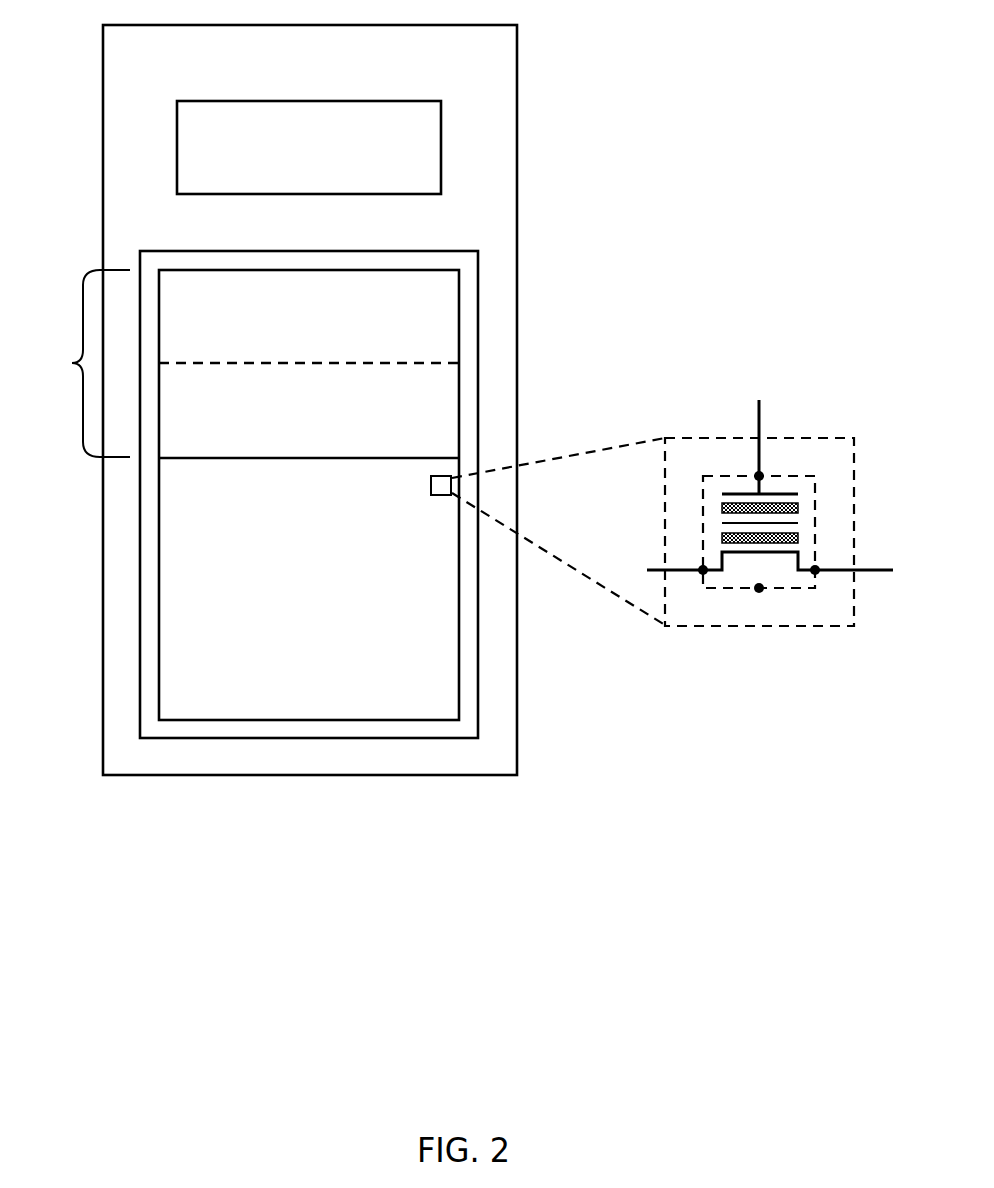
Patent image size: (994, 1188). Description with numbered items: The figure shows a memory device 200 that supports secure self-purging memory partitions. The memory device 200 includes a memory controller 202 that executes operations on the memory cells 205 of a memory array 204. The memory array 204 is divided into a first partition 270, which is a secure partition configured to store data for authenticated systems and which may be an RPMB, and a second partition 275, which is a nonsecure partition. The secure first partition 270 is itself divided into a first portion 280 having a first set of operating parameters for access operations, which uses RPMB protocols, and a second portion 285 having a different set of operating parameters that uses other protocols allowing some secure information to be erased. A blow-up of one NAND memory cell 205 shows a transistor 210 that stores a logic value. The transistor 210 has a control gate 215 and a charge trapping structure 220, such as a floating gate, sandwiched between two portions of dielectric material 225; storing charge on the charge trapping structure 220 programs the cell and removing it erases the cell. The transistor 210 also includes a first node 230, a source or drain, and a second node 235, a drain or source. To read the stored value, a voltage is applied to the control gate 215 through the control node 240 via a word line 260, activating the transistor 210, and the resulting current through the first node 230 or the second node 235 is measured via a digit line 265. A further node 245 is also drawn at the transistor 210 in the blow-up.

The memory device 200 is at (310, 400).
The memory controller 202 is at (309, 147).
The memory array 204 is at (177, 250).
The memory cell 205 is at (438, 475).
The transistor 210 is at (703, 495).
The control gate 215 is at (778, 494).
The charge trapping structure 220 is at (722, 523).
The dielectric material 225 is at (798, 537).
The first node 230 is at (703, 575).
The second node 235 is at (815, 575).
The control node 240 is at (759, 476).
The gate terminal 245 is at (759, 593).
The word line 260 is at (759, 420).
The digit line 265 is at (873, 570).
The first partition 270 is at (76, 363).
The second partition 275 is at (158, 570).
The first portion 280 is at (460, 288).
The second portion 285 is at (460, 382).